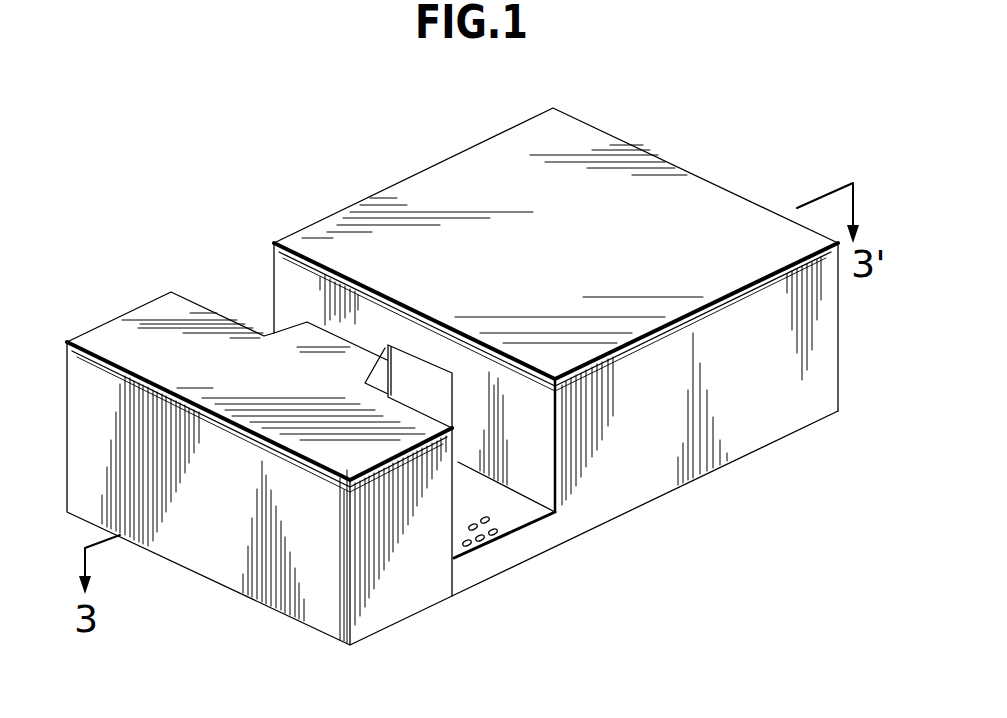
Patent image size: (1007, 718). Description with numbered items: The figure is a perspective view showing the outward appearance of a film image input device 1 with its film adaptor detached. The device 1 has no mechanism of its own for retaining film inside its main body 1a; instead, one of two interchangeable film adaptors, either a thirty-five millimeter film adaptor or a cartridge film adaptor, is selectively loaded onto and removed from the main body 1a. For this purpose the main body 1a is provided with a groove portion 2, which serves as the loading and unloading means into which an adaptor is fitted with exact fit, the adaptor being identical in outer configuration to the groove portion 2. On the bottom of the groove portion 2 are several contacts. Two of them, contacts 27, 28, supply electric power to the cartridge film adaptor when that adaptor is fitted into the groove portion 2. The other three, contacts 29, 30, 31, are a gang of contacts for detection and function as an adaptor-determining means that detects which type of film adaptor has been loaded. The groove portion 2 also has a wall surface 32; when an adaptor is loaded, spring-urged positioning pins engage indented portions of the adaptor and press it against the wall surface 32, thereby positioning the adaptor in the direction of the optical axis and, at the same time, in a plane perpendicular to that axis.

The film image input device 1 is at (708, 484).
The main body 1a is at (790, 412).
The groove portion 2 is at (268, 330).
The contact 27 is at (468, 528).
The contact 28 is at (478, 516).
The contact 29 is at (474, 548).
The contact 30 is at (486, 542).
The contact 31 is at (498, 533).
The wall surface 32 is at (527, 453).